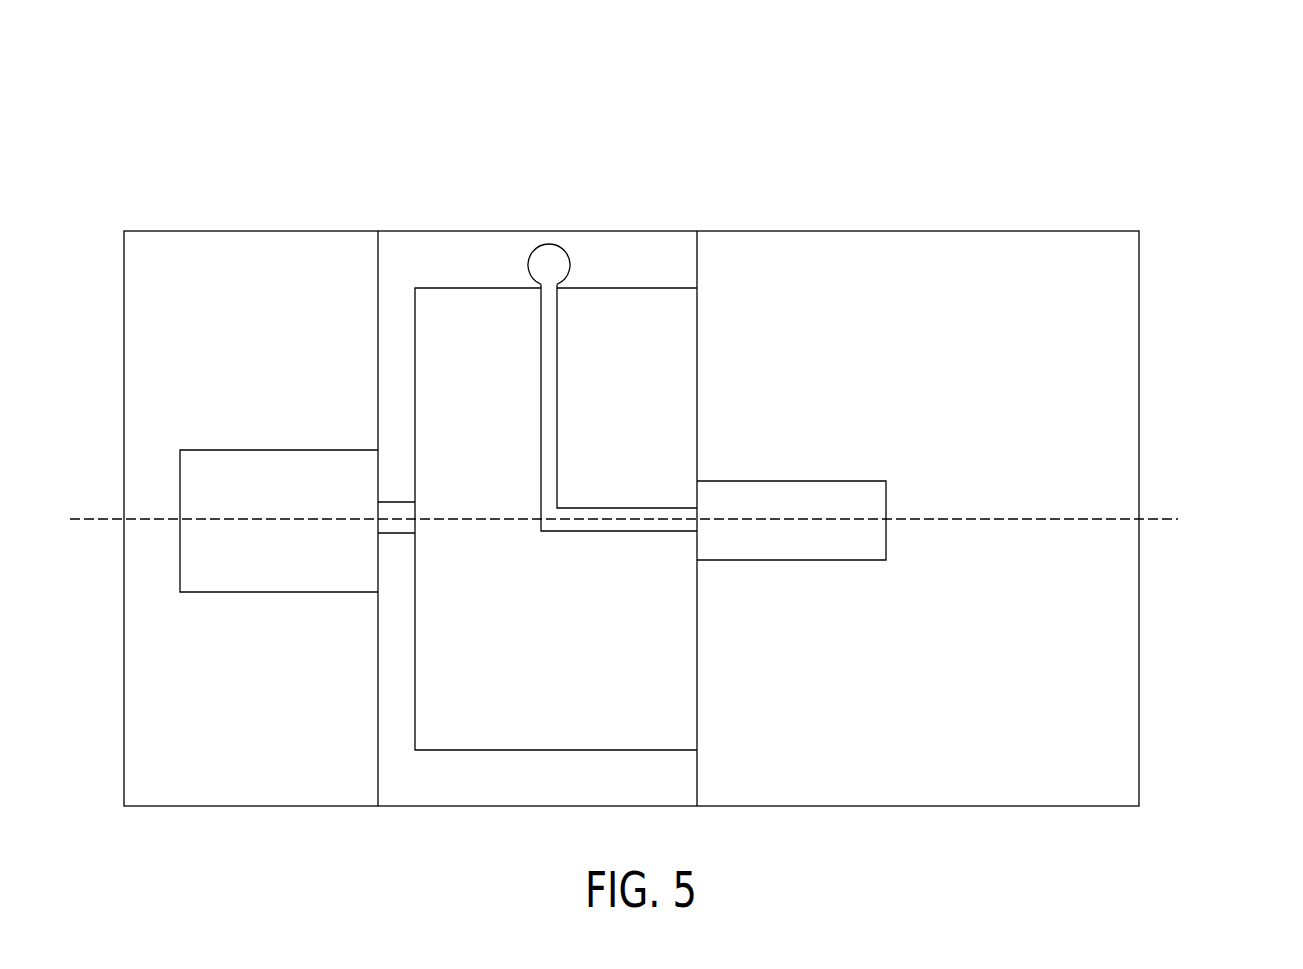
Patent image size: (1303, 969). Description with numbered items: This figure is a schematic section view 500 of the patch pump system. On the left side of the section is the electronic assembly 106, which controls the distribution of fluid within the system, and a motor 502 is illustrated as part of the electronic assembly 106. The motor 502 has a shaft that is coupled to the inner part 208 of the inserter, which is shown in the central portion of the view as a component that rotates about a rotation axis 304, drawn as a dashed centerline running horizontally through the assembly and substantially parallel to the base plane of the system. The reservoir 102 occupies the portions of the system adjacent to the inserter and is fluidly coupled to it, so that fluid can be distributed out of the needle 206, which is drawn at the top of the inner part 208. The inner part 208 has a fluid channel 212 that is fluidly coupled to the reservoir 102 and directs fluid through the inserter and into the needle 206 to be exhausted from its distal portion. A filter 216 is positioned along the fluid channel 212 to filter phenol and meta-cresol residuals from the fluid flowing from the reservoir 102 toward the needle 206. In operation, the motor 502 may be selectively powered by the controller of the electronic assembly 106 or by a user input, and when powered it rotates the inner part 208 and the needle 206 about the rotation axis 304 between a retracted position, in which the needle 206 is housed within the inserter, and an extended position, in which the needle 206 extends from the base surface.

The schematic section view 500 is at (1208, 140).
The electronic assembly 106 is at (272, 272).
The reservoir 102 is at (476, 219).
The needle 206 is at (562, 248).
The inner part 208 is at (548, 685).
The fluid channel 212 is at (660, 549).
The filter 216 is at (847, 548).
The rotation axis 304 is at (960, 518).
The motor 502 is at (260, 563).